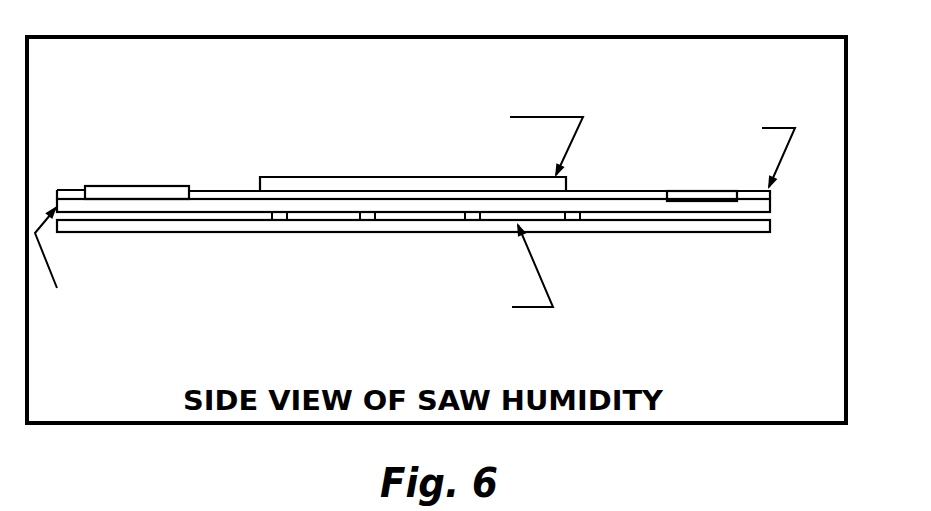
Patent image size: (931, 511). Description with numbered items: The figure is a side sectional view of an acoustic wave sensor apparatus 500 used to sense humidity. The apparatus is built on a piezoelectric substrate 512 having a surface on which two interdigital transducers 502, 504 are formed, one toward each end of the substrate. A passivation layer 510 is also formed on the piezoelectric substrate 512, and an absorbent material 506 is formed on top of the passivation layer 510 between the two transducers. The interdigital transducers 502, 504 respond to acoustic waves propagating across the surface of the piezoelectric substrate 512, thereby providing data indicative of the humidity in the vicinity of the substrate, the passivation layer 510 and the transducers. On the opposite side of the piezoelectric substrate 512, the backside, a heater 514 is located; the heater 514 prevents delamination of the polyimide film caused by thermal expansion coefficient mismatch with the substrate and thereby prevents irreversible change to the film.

The acoustic wave sensor apparatus 500 is at (128, 78).
The interdigital transducer 502 is at (147, 186).
The interdigital transducer 504 is at (705, 191).
The absorbent material 506 is at (331, 178).
The passivation layer 510 is at (771, 193).
The piezoelectric substrate 512 is at (770, 206).
The heater 514 is at (770, 228).